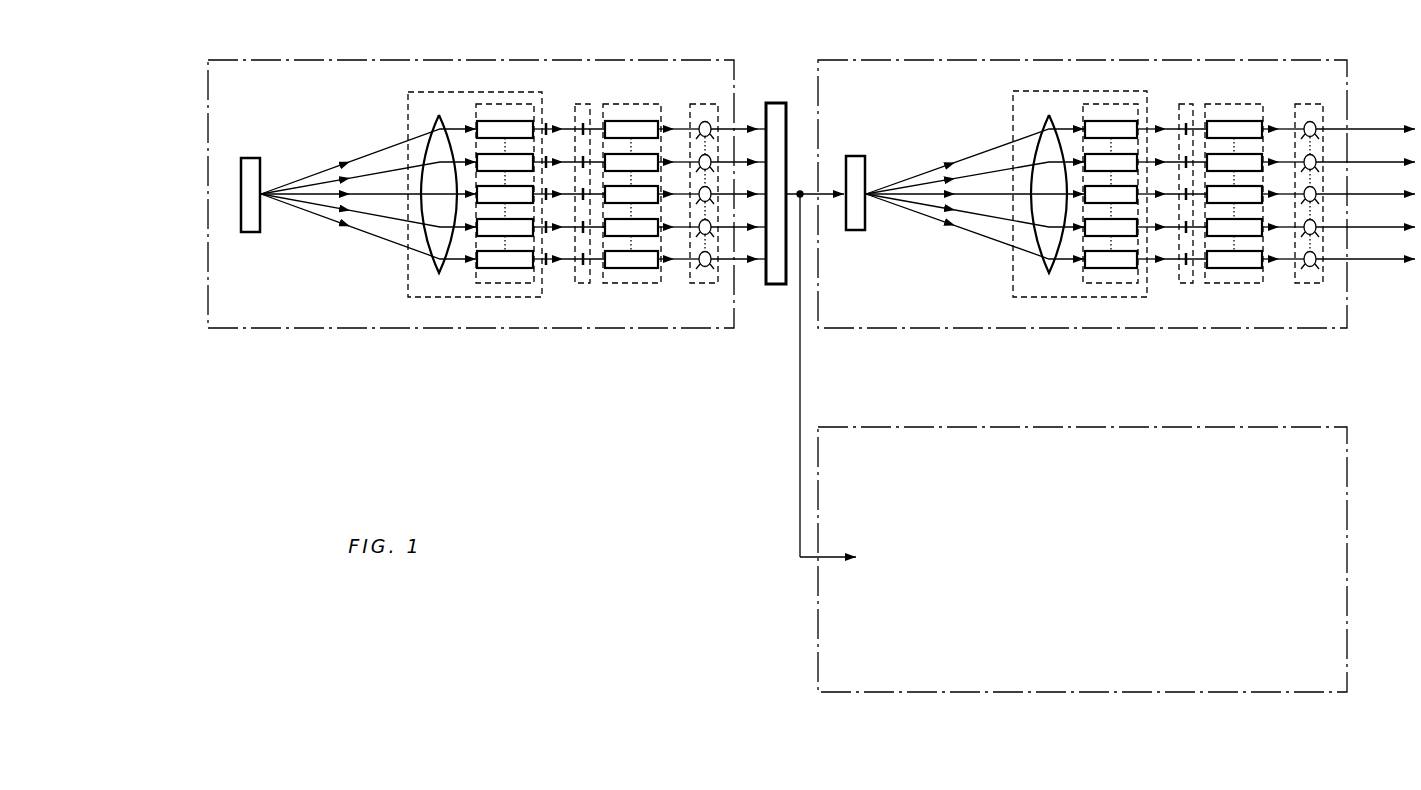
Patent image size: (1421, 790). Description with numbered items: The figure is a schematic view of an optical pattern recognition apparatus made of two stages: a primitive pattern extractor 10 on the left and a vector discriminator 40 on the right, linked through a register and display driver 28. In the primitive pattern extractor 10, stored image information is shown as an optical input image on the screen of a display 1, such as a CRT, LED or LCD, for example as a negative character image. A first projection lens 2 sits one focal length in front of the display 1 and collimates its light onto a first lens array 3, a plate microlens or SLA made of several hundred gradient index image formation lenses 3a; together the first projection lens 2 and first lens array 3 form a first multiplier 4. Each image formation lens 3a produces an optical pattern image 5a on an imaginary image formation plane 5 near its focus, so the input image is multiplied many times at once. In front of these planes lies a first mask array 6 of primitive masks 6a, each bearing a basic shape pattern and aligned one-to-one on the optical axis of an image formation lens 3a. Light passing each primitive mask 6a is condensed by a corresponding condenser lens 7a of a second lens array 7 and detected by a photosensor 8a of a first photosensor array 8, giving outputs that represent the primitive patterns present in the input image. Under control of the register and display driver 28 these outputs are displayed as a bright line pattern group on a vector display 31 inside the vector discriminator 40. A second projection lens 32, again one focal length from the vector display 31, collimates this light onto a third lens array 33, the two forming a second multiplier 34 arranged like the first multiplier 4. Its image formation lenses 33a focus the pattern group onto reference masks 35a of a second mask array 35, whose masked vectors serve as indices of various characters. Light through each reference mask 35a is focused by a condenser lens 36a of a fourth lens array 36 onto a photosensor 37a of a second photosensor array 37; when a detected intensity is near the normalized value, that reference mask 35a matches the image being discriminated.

The display 1 is at (250, 160).
The first projection lens 2 is at (437, 128).
The first lens array 3 is at (508, 104).
The image formation lenses 3a is at (480, 162).
The first multiplier 4 is at (406, 297).
The image formation planes 5 is at (554, 188).
The optical pattern images 5a is at (548, 233).
The first mask array 6 is at (580, 283).
The primitive masks 6a is at (586, 158).
The second lens array 7 is at (623, 104).
The condenser lenses 7a is at (640, 160).
The first photosensor array 8 is at (698, 104).
The photosensors 8a is at (708, 155).
The primitive pattern extractor 10 is at (303, 59).
The register and display driver 28 is at (775, 278).
The vector display 31 is at (857, 158).
The second projection lens 32 is at (1045, 124).
The third lens array 33 is at (1097, 104).
The image formation lenses 33a is at (1122, 230).
The second multiplier 34 is at (1062, 91).
The second mask array 35 is at (1183, 104).
The reference masks 35a is at (1187, 230).
The fourth lens array 36 is at (1222, 104).
The condenser lenses 36a is at (1240, 228).
The second photosensor array 37 is at (1298, 104).
The photosensors 37a is at (1313, 232).
The vector discriminator 40 is at (933, 60).